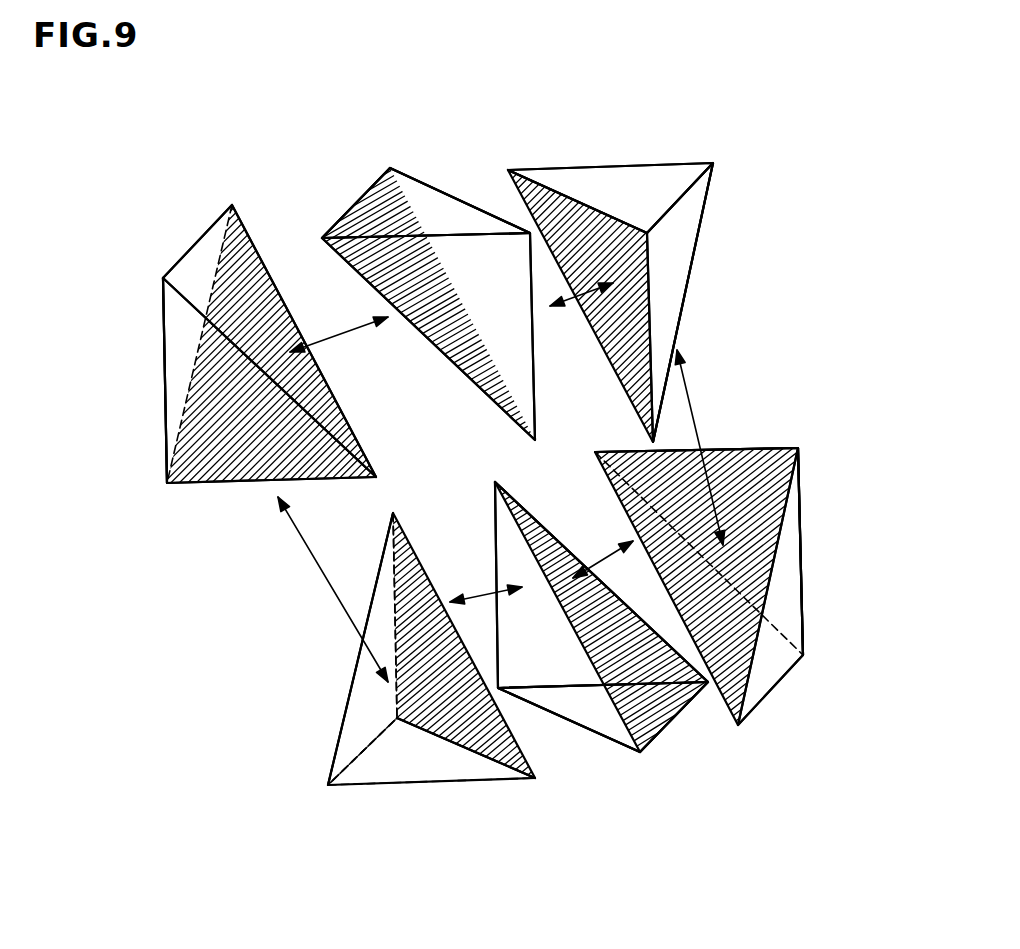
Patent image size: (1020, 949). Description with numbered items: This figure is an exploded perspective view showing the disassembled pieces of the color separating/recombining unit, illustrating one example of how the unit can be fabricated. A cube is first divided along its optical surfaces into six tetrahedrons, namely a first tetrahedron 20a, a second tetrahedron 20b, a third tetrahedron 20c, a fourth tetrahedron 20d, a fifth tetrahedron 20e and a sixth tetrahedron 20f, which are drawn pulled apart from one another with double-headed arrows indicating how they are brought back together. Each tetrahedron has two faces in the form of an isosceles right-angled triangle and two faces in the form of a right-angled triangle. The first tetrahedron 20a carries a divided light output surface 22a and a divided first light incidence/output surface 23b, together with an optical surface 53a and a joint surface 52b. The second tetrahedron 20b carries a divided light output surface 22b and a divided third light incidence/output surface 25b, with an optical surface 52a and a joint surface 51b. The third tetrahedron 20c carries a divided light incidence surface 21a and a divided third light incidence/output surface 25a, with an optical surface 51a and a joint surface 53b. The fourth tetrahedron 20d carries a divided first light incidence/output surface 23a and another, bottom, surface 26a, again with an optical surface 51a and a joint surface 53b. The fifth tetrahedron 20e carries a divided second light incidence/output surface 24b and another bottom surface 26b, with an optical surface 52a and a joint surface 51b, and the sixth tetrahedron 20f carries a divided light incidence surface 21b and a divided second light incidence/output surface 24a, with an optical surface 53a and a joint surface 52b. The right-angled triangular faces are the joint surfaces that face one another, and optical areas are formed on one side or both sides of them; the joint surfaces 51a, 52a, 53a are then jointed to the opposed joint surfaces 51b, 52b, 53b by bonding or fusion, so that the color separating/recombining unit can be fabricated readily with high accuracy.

The first tetrahedron 20a is at (167, 270).
The second tetrahedron 20b is at (448, 190).
The third tetrahedron 20c is at (697, 163).
The fourth tetrahedron 20d is at (338, 740).
The fifth tetrahedron 20e is at (683, 706).
The sixth tetrahedron 20f is at (803, 650).
The divided light incidence surface 21a is at (677, 300).
The divided light incidence surface 21b is at (767, 685).
The divided light output surface 22a is at (165, 370).
The divided light output surface 22b is at (527, 372).
The divided first light incidence/output surface 23a is at (360, 668).
The divided first light incidence/output surface 23b is at (168, 327).
The divided second light incidence/output surface 24a is at (808, 542).
The divided second light incidence/output surface 24b is at (510, 548).
The divided third light incidence/output surface 25a is at (633, 182).
The divided third light incidence/output surface 25b is at (408, 185).
The divided another surface (bottom surface) 26a is at (390, 767).
The divided another surface (bottom surface) 26b is at (615, 732).
The optical surface / joint surface 51a is at (573, 197).
The joint surface 51b is at (480, 220).
The optical surface / joint surface 52a is at (343, 203).
The joint surface 52b is at (193, 248).
The optical surface / joint surface 53a is at (337, 402).
The joint surface 53b is at (687, 257).